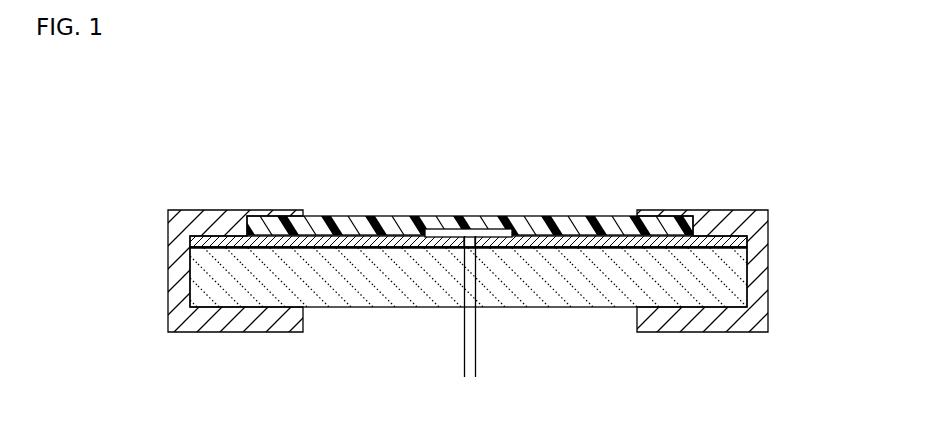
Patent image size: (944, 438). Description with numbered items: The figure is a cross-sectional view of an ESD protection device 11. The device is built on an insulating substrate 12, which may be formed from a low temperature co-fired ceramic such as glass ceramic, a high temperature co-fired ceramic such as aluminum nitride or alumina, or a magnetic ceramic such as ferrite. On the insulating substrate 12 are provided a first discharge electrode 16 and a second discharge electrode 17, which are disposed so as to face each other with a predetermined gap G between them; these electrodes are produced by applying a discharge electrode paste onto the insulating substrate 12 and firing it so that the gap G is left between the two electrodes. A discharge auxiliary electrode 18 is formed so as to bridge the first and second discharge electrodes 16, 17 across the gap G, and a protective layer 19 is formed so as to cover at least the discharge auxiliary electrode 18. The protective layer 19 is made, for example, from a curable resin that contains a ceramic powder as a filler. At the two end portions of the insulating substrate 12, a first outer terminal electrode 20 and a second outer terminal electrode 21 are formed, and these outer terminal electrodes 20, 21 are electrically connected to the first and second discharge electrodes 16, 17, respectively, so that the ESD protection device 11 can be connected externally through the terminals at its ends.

The ESD protection device 11 is at (226, 148).
The insulating substrate 12 is at (745, 282).
The first discharge electrode 16 is at (372, 250).
The second discharge electrode 17 is at (572, 250).
The discharge auxiliary electrode 18 is at (469, 236).
The protective layer 19 is at (562, 222).
The first outer terminal electrode 20 is at (170, 253).
The second outer terminal electrode 21 is at (764, 238).
The gap G is at (425, 366).